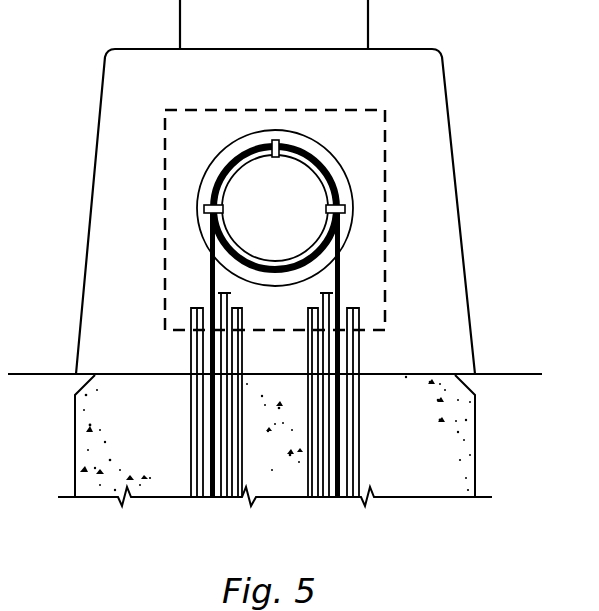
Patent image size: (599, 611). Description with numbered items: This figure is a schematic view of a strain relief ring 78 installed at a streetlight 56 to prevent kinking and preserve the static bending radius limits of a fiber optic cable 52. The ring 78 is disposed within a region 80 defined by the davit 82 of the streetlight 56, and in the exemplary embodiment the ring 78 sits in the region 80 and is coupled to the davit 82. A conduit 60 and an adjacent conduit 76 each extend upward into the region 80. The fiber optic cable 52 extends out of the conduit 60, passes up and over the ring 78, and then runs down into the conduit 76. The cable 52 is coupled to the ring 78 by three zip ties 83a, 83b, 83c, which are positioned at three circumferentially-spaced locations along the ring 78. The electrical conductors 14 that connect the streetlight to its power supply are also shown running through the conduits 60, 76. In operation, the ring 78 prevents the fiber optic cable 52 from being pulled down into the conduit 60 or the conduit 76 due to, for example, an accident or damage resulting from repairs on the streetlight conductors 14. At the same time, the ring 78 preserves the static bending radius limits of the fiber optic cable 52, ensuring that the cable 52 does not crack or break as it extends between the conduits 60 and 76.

The streetlight pole 56 is at (180, 19).
The davit 82 is at (456, 190).
The region 80 is at (387, 303).
The strain relief ring 78 is at (243, 136).
The fiber optic cable 52 is at (210, 280).
The zip tie 83a is at (204, 209).
The zip tie 83b is at (276, 158).
The zip tie 83c is at (345, 209).
The conduit 60 is at (191, 406).
The conduit 76 is at (359, 406).
The electrical conductors 14 is at (227, 473).